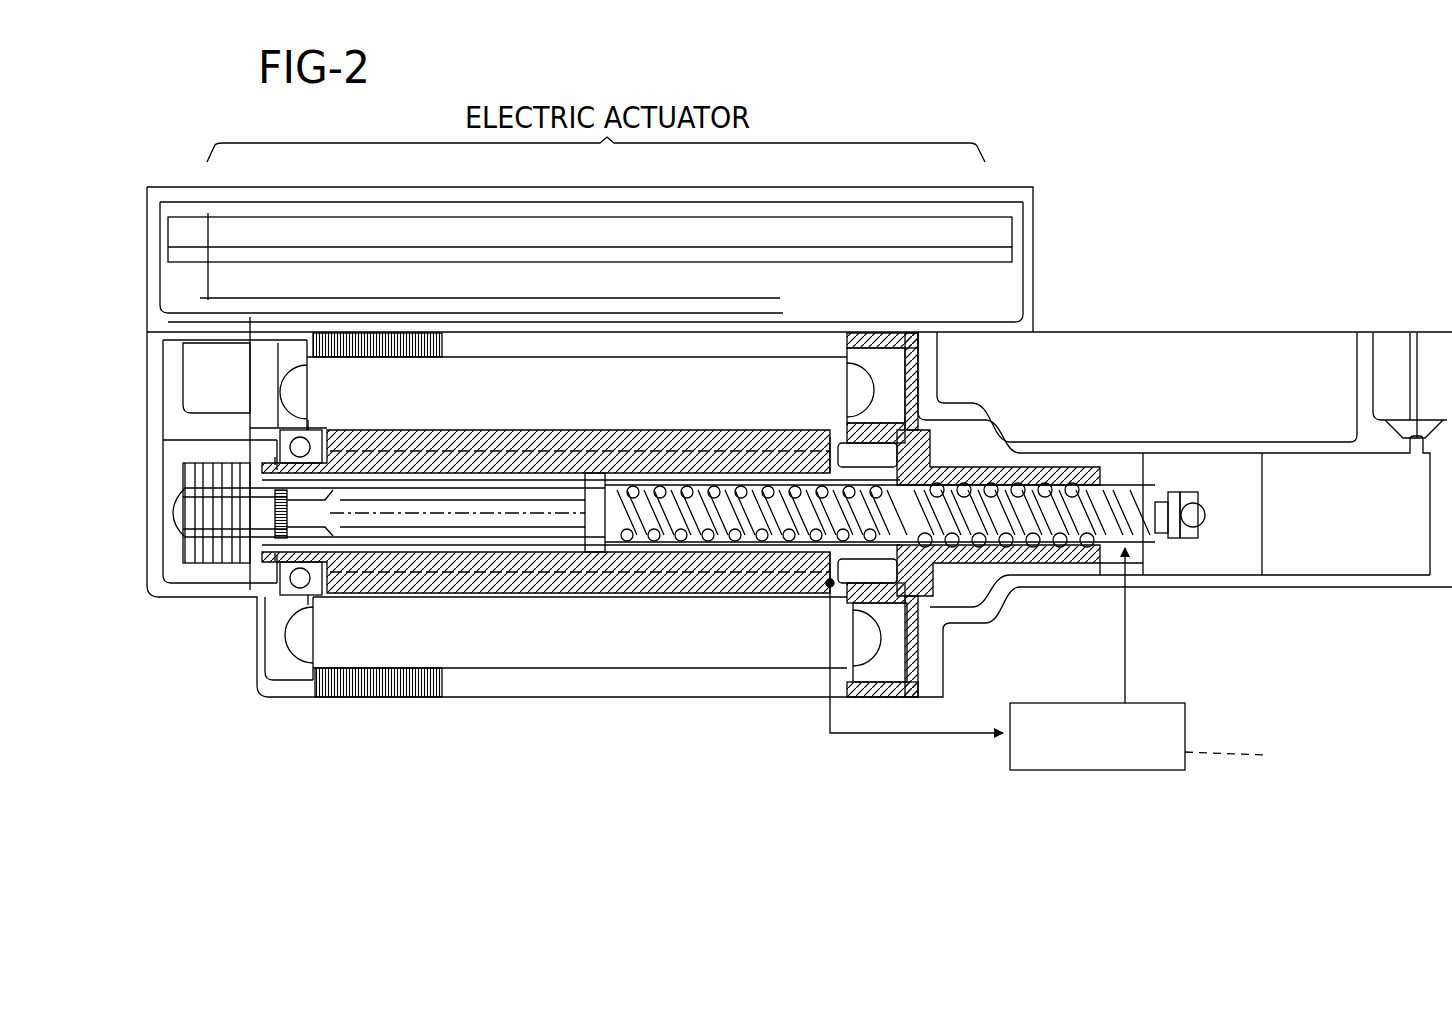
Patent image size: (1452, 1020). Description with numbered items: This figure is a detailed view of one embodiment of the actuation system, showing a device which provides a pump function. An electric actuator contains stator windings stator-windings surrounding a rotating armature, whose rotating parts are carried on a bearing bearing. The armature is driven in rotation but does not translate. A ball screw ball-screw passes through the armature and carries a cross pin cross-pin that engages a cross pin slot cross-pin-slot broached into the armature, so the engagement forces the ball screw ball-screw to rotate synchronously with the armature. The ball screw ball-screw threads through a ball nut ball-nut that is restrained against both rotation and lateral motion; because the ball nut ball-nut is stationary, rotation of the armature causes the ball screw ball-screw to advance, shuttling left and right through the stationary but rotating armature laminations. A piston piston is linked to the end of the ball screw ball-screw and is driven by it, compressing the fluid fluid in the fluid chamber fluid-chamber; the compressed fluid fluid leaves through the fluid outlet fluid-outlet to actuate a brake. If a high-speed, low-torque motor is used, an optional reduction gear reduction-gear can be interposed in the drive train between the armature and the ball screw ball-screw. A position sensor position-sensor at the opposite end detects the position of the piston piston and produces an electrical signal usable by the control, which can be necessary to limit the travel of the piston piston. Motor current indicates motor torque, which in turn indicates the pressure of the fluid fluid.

The cross pin slot cross-pin-slot is at (530, 478).
The cross pin cross-pin is at (598, 548).
The ball nut ball-nut is at (1030, 463).
The ball screw ball-screw is at (1082, 526).
The position sensor position-sensor is at (198, 580).
The element bearing is at (320, 592).
The stator windings stator-windings is at (290, 648).
The element piston is at (1234, 551).
The fluid chamber fluid-chamber is at (1344, 551).
The element fluid is at (1346, 483).
The fluid outlet fluid-outlet is at (1394, 348).
The reduction gear reduction-gear is at (1109, 659).